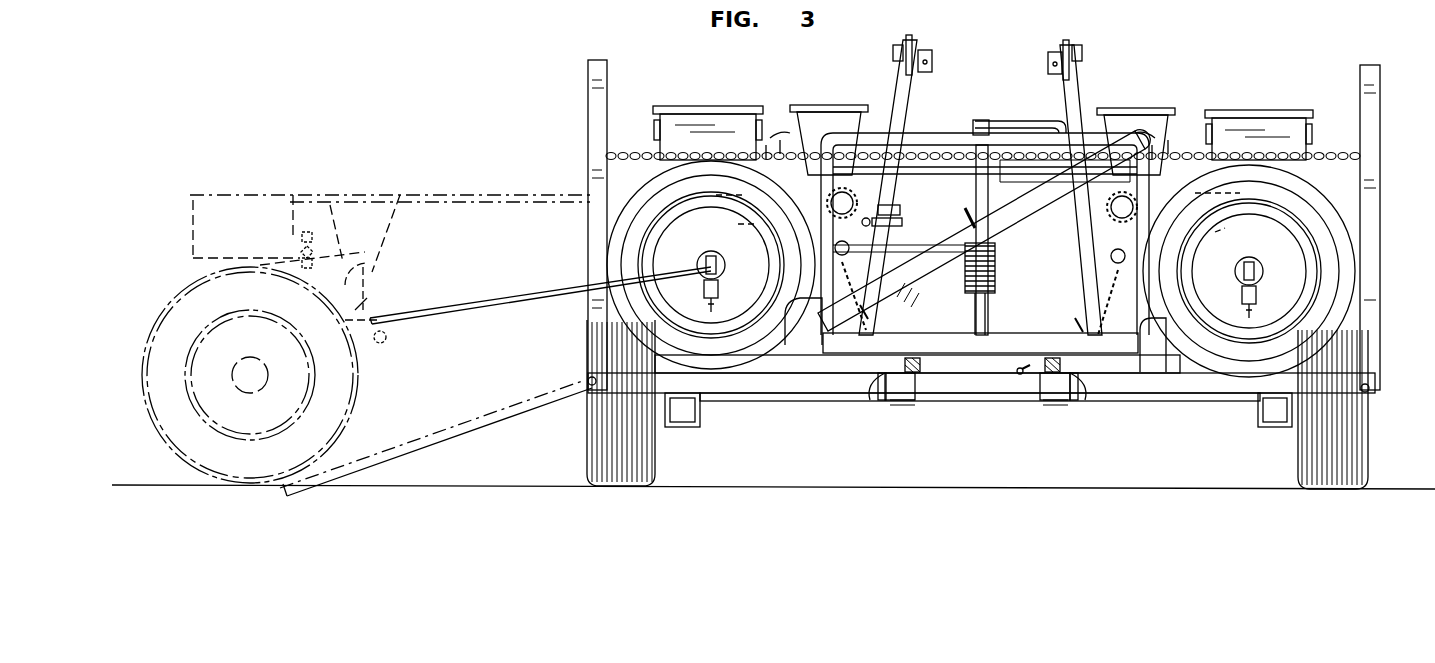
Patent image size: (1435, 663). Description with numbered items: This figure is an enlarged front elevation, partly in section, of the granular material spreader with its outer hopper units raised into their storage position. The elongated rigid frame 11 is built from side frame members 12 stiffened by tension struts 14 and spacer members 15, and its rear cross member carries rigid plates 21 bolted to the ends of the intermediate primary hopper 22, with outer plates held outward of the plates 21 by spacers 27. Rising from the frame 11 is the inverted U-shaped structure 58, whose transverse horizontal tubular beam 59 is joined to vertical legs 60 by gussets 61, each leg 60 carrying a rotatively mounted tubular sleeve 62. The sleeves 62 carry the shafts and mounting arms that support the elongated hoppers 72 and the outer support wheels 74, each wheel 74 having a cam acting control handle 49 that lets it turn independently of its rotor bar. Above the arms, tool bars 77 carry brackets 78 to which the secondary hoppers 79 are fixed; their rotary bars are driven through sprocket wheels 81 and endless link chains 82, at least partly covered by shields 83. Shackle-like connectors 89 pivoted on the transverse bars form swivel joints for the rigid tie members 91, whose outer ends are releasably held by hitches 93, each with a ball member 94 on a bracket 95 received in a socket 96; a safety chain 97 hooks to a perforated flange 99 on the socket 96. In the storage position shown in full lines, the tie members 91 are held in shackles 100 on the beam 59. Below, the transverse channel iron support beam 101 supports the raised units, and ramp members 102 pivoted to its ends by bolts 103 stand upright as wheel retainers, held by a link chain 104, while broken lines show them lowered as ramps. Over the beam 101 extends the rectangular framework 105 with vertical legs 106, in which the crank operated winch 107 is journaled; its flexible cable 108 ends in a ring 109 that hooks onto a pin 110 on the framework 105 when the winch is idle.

The elongated rigid frame 11 is at (1020, 375).
The side frame members 12 is at (948, 380).
The tension members or struts 14 is at (898, 402).
The spacer members 15 is at (880, 390).
The rigid plates 21 is at (700, 420).
The intermediate primary hopper 22 is at (1030, 252).
The spacers 27 is at (680, 420).
The cam acting control member 49 is at (716, 300).
The inverted U-shaped structure 58 is at (935, 150).
The transverse horizontal tubular beam 59 is at (1012, 190).
The vertical legs 60 is at (975, 189).
The gussets 61 is at (977, 226).
The tubular sleeve 62 is at (748, 242).
The elongated hoppers 72 is at (185, 222).
The outer support wheels 74 is at (165, 370).
The tool bars 77 is at (320, 252).
The brackets 78 is at (330, 238).
The secondary hoppers 79 is at (368, 205).
The sprocket wheels 81 is at (882, 229).
The endless link chains 82 is at (893, 213).
The shields 83 is at (812, 215).
The shackle-like connectors 89 is at (845, 380).
The tie members 91 is at (901, 82).
The hitches 93 is at (908, 42).
The ball member 94 is at (388, 341).
The bracket 95 is at (348, 330).
The socket 96 is at (892, 50).
The safety chain 97 is at (890, 280).
The perforated flange 99 is at (930, 55).
The shackles 100 is at (960, 194).
The transverse support beam 101 is at (805, 395).
The ramp members 102 is at (600, 88).
The bolts 103 is at (588, 390).
The link chain 104 is at (622, 148).
The rectangular framework 105 is at (1028, 120).
The legs 106 is at (1178, 370).
The crank operated winch 107 is at (984, 120).
The flexible cable 108 is at (499, 296).
The ring 109 is at (899, 238).
The pin 110 is at (964, 218).